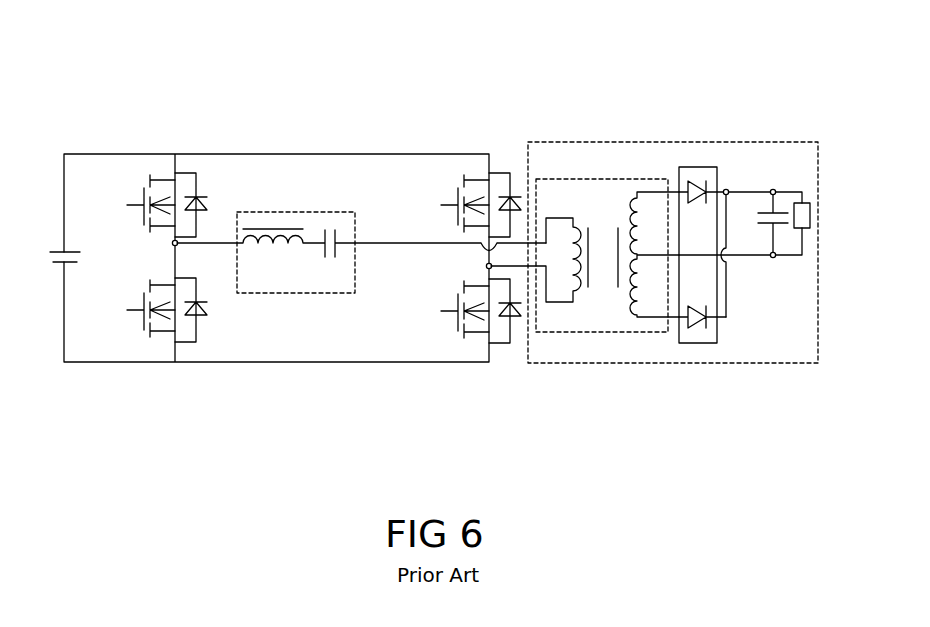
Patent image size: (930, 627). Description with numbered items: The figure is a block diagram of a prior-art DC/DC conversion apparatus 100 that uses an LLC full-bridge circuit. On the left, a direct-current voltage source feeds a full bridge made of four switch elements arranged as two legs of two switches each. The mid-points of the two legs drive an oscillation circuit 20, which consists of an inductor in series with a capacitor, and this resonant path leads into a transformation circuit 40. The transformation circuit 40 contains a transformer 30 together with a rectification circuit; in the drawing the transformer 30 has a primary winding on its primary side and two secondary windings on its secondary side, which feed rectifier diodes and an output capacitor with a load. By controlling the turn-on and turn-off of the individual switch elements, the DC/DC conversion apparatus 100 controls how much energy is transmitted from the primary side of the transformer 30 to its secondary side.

The DC/DC conversion apparatus 100 is at (420, 183).
The oscillation circuit 20 is at (330, 212).
The transformer 30 is at (610, 179).
The transformation circuit 40 is at (712, 142).